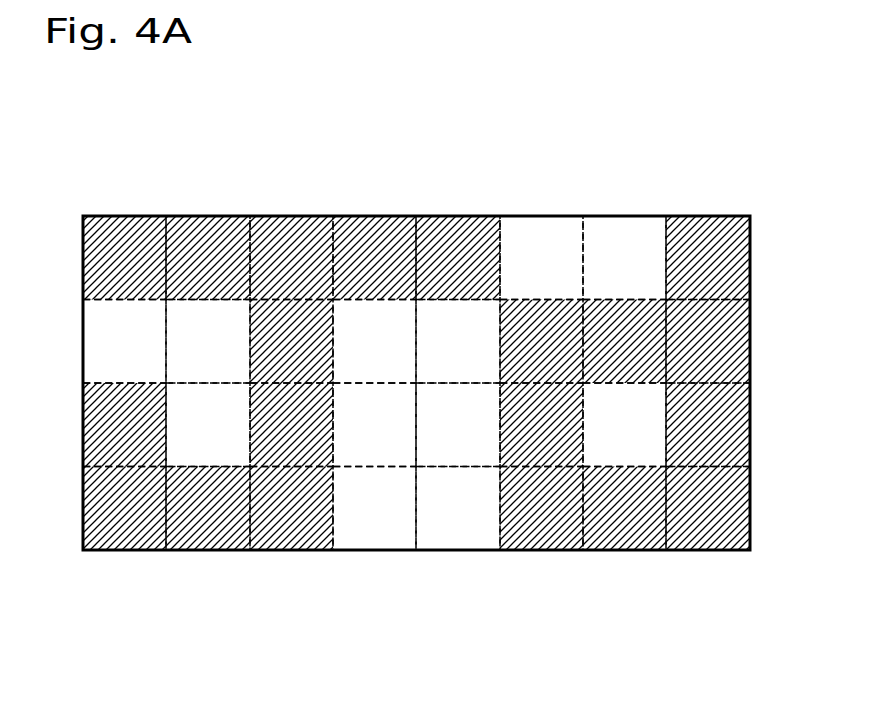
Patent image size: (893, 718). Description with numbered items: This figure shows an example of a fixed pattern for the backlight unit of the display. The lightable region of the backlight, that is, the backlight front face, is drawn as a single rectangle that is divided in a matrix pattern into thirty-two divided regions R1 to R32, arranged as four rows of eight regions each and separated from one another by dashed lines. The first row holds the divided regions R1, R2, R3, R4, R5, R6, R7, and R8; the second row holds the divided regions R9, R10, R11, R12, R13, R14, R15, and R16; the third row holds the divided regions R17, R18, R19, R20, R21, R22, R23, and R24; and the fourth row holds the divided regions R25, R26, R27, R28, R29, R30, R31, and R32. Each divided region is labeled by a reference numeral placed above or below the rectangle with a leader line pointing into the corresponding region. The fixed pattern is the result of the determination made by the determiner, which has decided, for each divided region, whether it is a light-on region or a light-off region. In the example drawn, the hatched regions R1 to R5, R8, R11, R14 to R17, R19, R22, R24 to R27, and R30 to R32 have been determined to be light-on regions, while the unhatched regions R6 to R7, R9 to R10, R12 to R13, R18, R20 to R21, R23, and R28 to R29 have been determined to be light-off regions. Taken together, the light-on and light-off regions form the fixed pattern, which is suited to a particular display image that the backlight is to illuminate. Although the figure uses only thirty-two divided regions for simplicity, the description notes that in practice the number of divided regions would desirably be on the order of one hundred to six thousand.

The divided region R1 is at (98, 218).
The divided region R2 is at (181, 218).
The divided region R3 is at (264, 218).
The divided region R4 is at (348, 218).
The divided region R5 is at (431, 218).
The divided region R6 is at (514, 218).
The divided region R7 is at (598, 218).
The divided region R8 is at (681, 218).
The divided region R9 is at (131, 325).
The divided region R10 is at (214, 325).
The divided region R11 is at (297, 325).
The divided region R12 is at (381, 325).
The divided region R13 is at (464, 325).
The divided region R14 is at (547, 325).
The divided region R15 is at (631, 325).
The divided region R16 is at (714, 325).
The divided region R17 is at (134, 447).
The divided region R18 is at (217, 447).
The divided region R19 is at (300, 447).
The divided region R20 is at (384, 447).
The divided region R21 is at (467, 447).
The divided region R22 is at (550, 447).
The divided region R23 is at (634, 447).
The divided region R24 is at (717, 447).
The divided region R25 is at (91, 547).
The divided region R26 is at (174, 547).
The divided region R27 is at (257, 547).
The divided region R28 is at (341, 547).
The divided region R29 is at (424, 547).
The divided region R30 is at (507, 547).
The divided region R31 is at (591, 547).
The divided region R32 is at (674, 547).